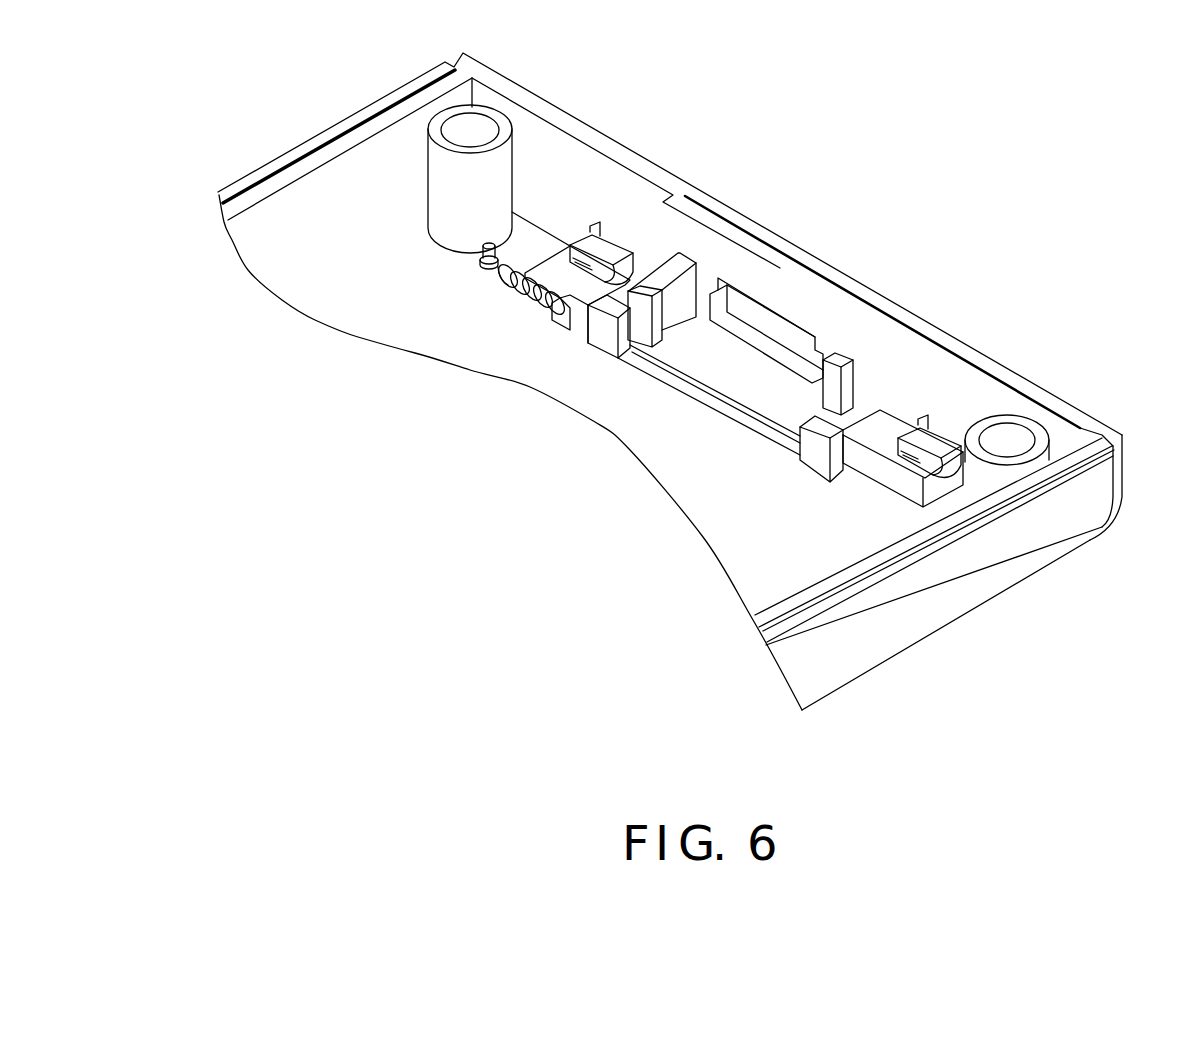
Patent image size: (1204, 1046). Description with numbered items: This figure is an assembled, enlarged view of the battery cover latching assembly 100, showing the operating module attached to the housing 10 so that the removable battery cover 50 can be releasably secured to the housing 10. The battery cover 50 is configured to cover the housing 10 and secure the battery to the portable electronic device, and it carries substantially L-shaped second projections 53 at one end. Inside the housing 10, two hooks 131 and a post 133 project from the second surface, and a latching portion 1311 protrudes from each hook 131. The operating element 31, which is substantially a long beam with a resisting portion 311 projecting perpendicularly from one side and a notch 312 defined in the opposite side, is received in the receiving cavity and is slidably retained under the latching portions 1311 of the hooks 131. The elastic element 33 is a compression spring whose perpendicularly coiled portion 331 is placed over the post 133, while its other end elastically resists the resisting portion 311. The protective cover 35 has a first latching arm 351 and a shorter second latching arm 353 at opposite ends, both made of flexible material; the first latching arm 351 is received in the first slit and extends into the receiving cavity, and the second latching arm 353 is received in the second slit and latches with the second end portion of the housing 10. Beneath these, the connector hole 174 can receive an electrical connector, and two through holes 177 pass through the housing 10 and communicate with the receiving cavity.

The battery cover latching assembly 100 is at (893, 104).
The housing 10 is at (1055, 403).
The battery cover 50 is at (920, 575).
The second projections 53 is at (598, 253).
The post 133 is at (483, 258).
The elastic element 33 is at (502, 272).
The coiled portion 331 is at (489, 268).
The resisting portion 311 is at (557, 305).
The notch 312 is at (637, 273).
The first latching arm 351 is at (657, 317).
The protective cover 35 is at (798, 257).
The connector hole 174 is at (738, 322).
The second latching arm 353 is at (838, 380).
The operating element 31 is at (723, 367).
The hooks 131 is at (817, 453).
The latching portion 1311 is at (930, 440).
The through holes 177 is at (928, 480).